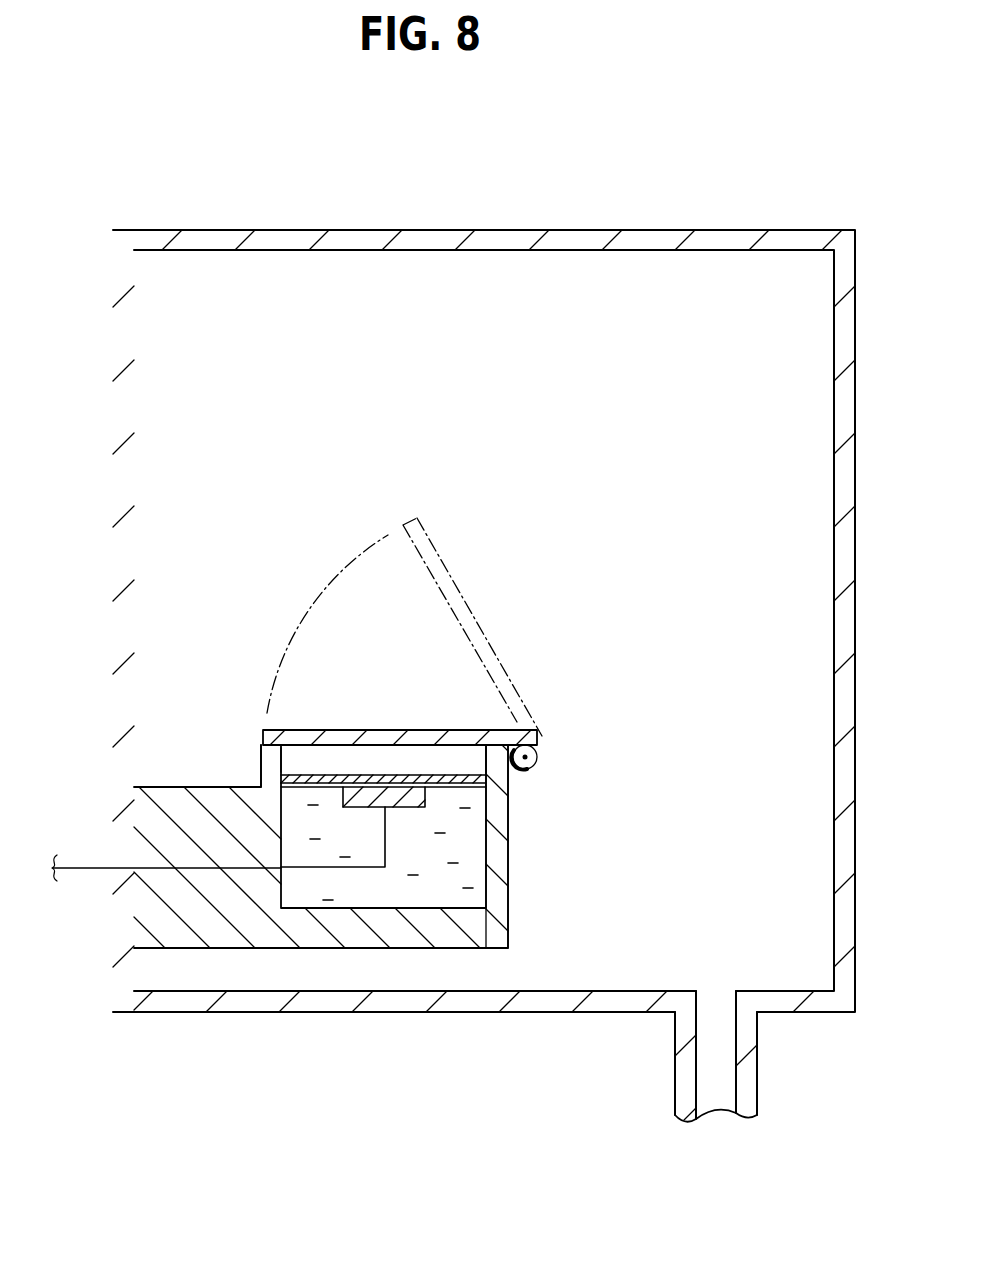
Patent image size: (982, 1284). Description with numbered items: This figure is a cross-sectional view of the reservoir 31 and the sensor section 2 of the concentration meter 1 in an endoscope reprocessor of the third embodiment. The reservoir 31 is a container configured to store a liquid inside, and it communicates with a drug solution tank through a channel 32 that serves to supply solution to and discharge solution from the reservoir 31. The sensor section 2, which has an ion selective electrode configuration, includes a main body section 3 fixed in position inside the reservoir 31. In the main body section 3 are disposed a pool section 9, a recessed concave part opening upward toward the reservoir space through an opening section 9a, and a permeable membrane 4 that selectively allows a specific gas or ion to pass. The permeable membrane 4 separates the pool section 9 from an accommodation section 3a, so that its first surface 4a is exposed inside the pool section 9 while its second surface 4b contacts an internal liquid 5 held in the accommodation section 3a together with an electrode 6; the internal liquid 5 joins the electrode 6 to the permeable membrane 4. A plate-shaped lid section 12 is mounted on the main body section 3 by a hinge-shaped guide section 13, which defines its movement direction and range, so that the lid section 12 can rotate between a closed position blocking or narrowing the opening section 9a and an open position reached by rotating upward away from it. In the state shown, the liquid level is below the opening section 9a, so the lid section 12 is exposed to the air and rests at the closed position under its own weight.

The concentration meter 1 is at (229, 582).
The sensor section 2 is at (380, 798).
The main body section 3 is at (508, 922).
The accommodation section 3a is at (507, 806).
The permeable membrane 4 is at (321, 780).
The first surface 4a is at (348, 789).
The second surface 4b is at (298, 796).
The internal liquid 5 is at (468, 876).
The electrode 6 is at (432, 815).
The pool section 9 is at (281, 762).
The opening section 9a is at (463, 758).
The lid section 12 is at (393, 730).
The guide section 13 is at (543, 752).
The reservoir 31 is at (484, 637).
The channel 32 is at (675, 1098).